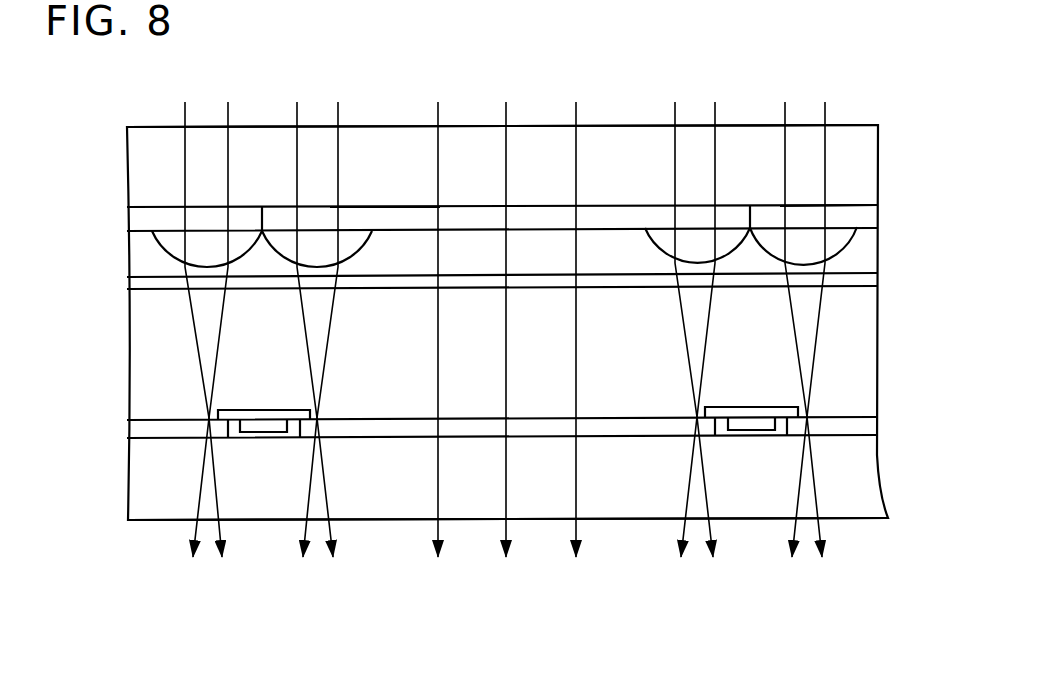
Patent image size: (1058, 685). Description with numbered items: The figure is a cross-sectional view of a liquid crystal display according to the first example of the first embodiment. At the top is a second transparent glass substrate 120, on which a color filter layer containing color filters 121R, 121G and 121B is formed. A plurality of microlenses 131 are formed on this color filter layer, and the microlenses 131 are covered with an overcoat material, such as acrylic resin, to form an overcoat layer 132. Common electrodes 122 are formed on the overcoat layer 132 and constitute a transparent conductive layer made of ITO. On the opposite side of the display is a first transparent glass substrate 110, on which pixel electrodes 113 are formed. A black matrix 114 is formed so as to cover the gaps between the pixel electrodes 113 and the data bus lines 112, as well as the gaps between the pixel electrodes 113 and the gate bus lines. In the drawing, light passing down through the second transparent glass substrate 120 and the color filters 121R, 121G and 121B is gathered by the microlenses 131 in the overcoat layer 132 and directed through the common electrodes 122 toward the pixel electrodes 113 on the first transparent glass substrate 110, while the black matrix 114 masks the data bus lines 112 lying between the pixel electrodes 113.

The first transparent glass substrate 110 is at (188, 503).
The data bus line 112 is at (750, 428).
The pixel electrode 113 is at (180, 432).
The black matrix 114 is at (250, 418).
The second transparent glass substrate 120 is at (167, 147).
The red color filter 121R is at (150, 222).
The green color filter 121G is at (385, 218).
The blue color filter 121B is at (833, 217).
The common electrode 122 is at (837, 277).
The microlens 131 is at (662, 240).
The overcoat layer 132 is at (142, 255).